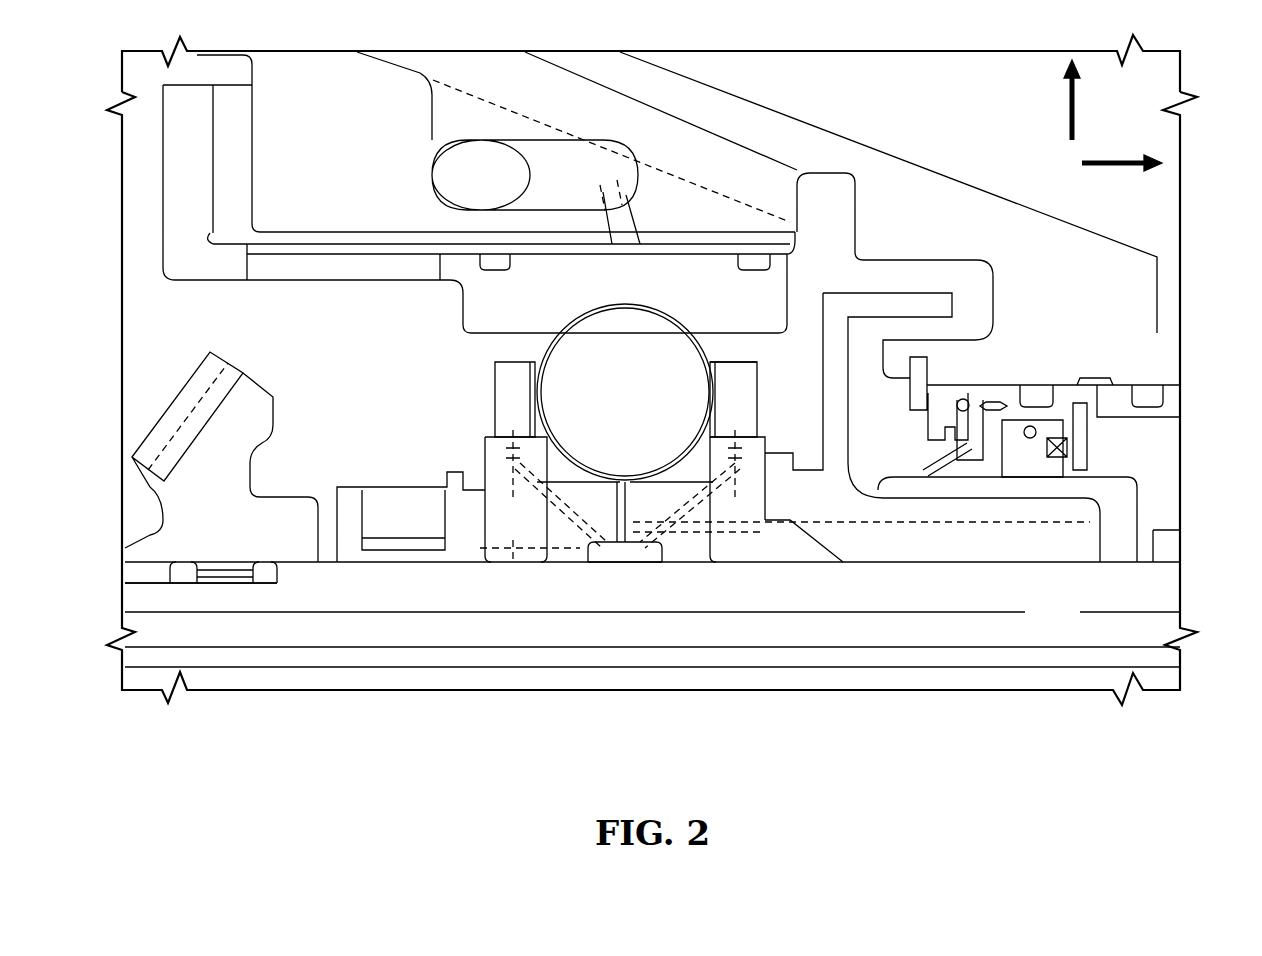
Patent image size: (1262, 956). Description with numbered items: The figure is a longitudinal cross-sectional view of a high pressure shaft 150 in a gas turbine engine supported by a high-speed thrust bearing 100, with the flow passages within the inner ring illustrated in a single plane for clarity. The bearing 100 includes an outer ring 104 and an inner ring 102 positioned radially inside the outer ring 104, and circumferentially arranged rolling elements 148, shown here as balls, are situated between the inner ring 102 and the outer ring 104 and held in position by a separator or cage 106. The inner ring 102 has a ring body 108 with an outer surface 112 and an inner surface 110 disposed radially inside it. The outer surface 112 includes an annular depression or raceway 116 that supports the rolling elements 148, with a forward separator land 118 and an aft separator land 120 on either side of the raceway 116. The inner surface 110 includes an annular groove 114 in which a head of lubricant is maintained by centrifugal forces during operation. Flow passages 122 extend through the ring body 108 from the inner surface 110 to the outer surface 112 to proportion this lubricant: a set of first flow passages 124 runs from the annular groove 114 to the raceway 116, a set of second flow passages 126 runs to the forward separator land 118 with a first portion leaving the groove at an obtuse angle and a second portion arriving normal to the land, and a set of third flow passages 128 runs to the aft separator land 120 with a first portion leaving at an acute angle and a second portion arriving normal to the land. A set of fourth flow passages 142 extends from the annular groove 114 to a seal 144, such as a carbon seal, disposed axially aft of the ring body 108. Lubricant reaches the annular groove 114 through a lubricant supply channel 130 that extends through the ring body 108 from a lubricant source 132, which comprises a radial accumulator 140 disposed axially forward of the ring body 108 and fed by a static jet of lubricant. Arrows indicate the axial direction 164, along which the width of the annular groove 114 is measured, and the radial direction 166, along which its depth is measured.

The bearing assembly 100 is at (832, 210).
The inner ring 102 is at (632, 516).
The outer ring 104 is at (466, 304).
The cage 106 is at (734, 373).
The ring body 108 is at (492, 476).
The inner surface 110 is at (730, 553).
The outer surface 112 is at (677, 344).
The annular groove 114 is at (665, 578).
The raceway 116 is at (572, 475).
The forward separator land 118 is at (500, 447).
The aft separator land 120 is at (745, 440).
The flow passages 122 is at (773, 567).
The first flow passages 124 is at (585, 540).
The second flow passages 126 is at (537, 547).
The third flow passages 128 is at (712, 508).
The lubricant supply channel 130 is at (511, 550).
The lubricant source 132 is at (249, 556).
The radial accumulator 140 is at (348, 557).
The fourth flow passages 142 is at (743, 545).
The seal 144 is at (1043, 545).
The rolling elements 148 is at (645, 363).
The shaft 150 is at (1170, 590).
The axial direction 164 is at (1112, 166).
The radial direction 166 is at (1075, 117).